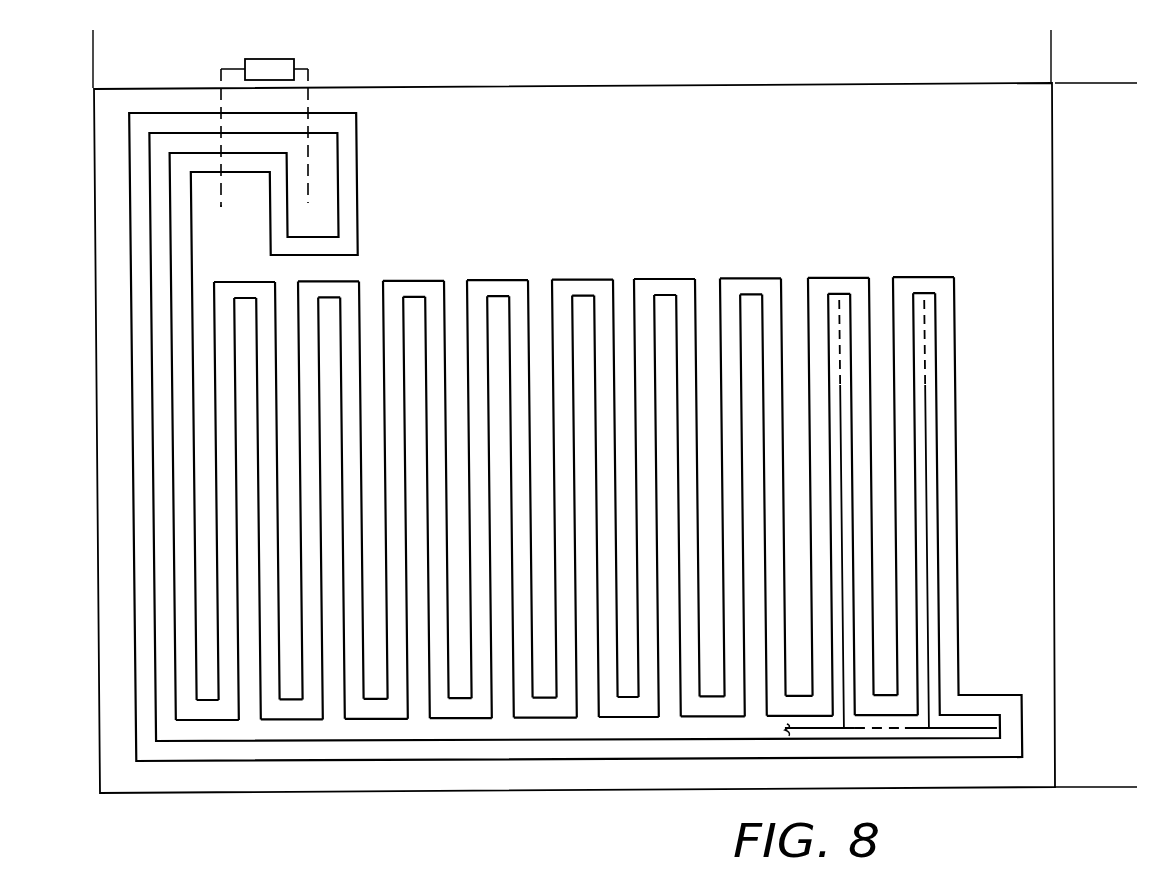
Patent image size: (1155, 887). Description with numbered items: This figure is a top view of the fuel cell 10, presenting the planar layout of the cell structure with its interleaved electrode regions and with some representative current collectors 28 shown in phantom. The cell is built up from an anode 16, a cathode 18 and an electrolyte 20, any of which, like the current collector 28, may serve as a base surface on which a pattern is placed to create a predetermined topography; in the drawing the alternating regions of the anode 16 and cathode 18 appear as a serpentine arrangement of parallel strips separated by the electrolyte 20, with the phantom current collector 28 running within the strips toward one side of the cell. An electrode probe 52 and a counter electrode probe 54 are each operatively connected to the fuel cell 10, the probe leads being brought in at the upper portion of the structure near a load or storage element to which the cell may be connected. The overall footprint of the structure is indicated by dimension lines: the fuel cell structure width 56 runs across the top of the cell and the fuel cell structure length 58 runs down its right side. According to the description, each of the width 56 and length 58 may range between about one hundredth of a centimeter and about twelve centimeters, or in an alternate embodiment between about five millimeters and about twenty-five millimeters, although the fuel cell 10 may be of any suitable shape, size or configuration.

The fuel cell 10 is at (1117, 335).
The anode 16 is at (505, 697).
The cathode 18 is at (765, 174).
The electrolyte 20 is at (593, 288).
The current collector 28 is at (927, 487).
The electrode probe 52 is at (318, 216).
The counter electrode probe 54 is at (242, 245).
The fuel cell structure width 56 is at (1045, 45).
The fuel cell structure length 58 is at (1124, 88).